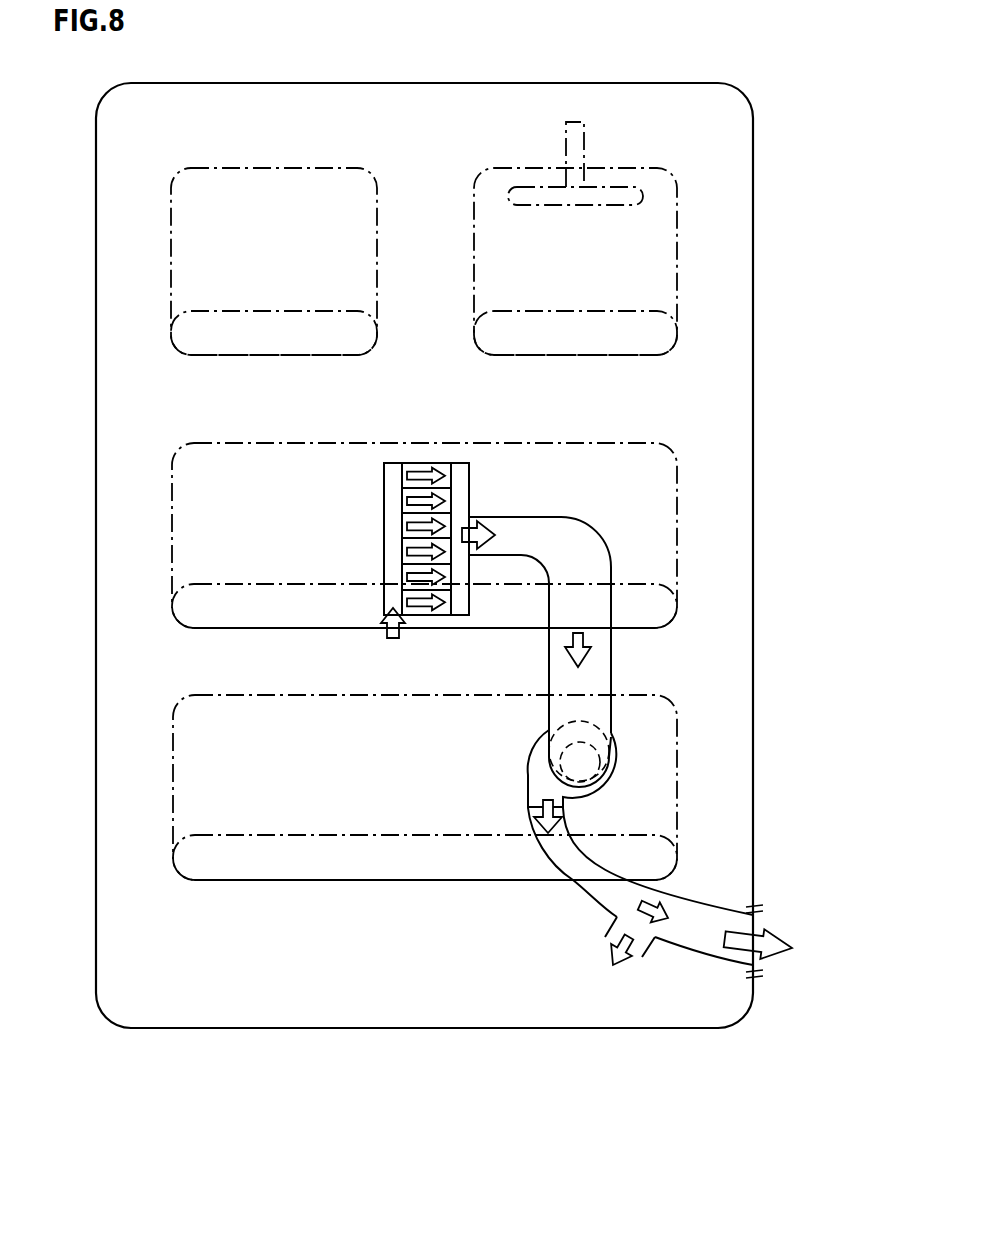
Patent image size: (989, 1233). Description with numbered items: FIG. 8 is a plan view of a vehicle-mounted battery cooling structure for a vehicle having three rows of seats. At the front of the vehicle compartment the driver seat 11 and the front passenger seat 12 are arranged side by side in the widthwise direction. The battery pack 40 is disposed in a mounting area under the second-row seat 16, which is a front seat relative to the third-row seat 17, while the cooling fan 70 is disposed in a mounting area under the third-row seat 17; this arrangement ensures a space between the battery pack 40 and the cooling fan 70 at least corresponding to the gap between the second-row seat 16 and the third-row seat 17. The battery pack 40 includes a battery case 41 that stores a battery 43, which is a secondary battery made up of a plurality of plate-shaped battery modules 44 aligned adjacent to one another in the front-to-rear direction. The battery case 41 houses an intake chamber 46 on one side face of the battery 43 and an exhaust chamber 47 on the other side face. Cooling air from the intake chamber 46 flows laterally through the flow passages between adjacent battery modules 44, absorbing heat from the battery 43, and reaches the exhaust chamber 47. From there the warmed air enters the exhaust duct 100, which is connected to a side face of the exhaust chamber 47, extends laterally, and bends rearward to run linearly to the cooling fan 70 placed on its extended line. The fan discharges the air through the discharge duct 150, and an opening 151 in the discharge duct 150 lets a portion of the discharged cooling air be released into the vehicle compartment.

The driver seat 11 is at (657, 259).
The front passenger seat 12 is at (188, 259).
The second-row seat 16 is at (657, 531).
The third-row seat 17 is at (660, 773).
The battery pack 40 is at (471, 468).
The battery case 41 is at (402, 463).
The battery 43 is at (46, 447).
The battery module 44 is at (403, 470).
The intake chamber 46 is at (385, 613).
The exhaust chamber 47 is at (462, 493).
The cooling fan 70 is at (540, 768).
The exhaust duct 100 is at (590, 677).
The discharge duct 150 is at (697, 920).
The opening 151 is at (632, 955).